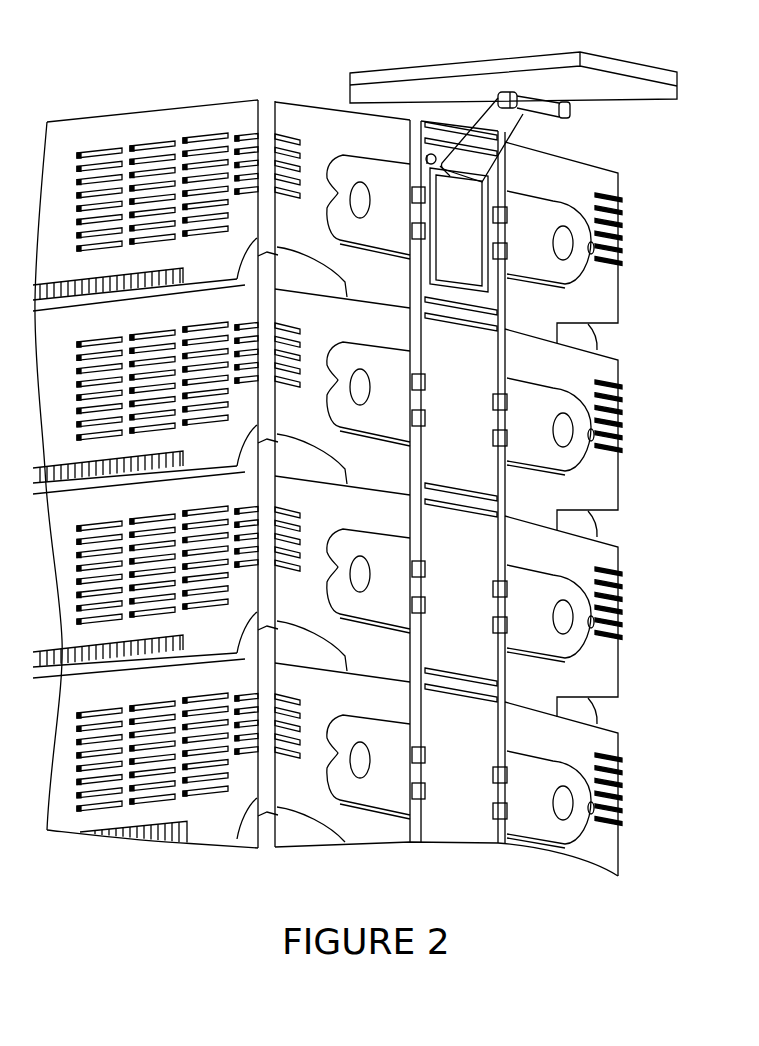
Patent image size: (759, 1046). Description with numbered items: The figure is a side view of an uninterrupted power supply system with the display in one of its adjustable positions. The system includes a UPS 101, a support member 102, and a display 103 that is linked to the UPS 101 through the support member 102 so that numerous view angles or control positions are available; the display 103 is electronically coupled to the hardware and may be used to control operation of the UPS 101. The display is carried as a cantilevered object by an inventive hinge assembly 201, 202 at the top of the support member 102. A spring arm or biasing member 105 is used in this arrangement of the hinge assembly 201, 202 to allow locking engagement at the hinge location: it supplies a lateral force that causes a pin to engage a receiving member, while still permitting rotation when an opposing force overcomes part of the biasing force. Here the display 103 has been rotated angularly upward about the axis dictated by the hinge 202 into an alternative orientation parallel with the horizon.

The UPS 101 is at (620, 697).
The support member 102 is at (507, 148).
The display 103 is at (683, 86).
The biasing member 105 is at (445, 165).
The hinge assembly 201 is at (427, 157).
The hinge 202 is at (503, 105).